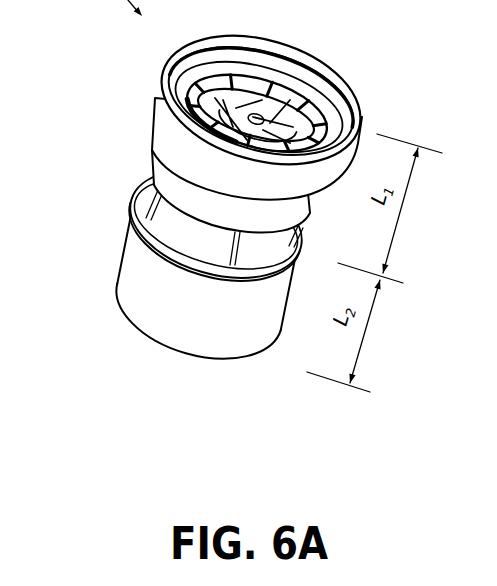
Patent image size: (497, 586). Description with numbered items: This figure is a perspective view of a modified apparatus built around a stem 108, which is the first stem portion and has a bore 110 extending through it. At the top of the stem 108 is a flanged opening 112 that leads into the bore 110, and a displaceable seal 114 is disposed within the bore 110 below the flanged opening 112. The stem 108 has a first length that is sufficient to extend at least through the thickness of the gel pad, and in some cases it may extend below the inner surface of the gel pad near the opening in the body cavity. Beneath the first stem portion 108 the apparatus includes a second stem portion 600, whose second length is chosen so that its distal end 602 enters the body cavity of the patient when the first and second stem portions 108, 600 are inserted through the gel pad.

The stem 108 is at (150, 147).
The bore 110 is at (262, 114).
The flanged opening 112 is at (155, 93).
The displaceable seal 114 is at (272, 135).
The second stem portion 600 is at (140, 275).
The distal end 602 is at (160, 364).